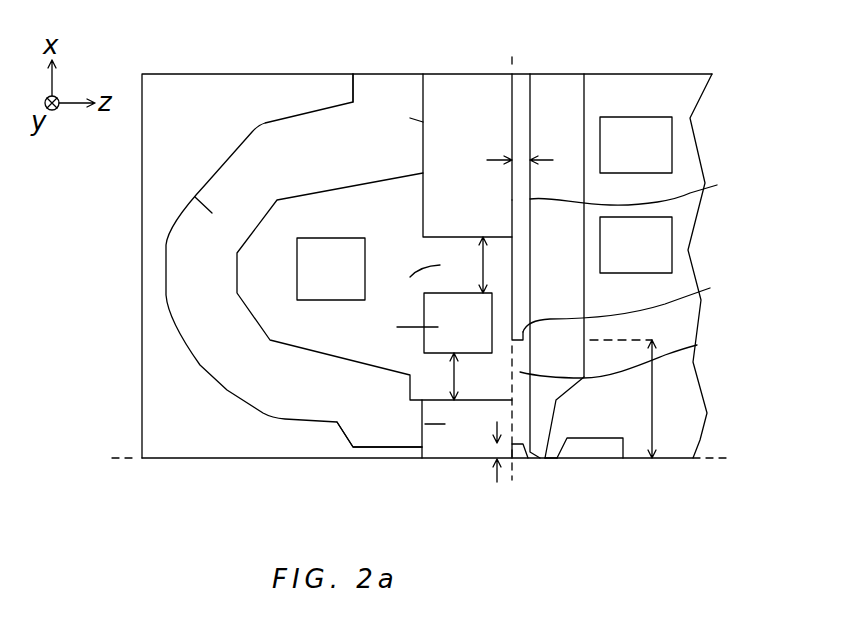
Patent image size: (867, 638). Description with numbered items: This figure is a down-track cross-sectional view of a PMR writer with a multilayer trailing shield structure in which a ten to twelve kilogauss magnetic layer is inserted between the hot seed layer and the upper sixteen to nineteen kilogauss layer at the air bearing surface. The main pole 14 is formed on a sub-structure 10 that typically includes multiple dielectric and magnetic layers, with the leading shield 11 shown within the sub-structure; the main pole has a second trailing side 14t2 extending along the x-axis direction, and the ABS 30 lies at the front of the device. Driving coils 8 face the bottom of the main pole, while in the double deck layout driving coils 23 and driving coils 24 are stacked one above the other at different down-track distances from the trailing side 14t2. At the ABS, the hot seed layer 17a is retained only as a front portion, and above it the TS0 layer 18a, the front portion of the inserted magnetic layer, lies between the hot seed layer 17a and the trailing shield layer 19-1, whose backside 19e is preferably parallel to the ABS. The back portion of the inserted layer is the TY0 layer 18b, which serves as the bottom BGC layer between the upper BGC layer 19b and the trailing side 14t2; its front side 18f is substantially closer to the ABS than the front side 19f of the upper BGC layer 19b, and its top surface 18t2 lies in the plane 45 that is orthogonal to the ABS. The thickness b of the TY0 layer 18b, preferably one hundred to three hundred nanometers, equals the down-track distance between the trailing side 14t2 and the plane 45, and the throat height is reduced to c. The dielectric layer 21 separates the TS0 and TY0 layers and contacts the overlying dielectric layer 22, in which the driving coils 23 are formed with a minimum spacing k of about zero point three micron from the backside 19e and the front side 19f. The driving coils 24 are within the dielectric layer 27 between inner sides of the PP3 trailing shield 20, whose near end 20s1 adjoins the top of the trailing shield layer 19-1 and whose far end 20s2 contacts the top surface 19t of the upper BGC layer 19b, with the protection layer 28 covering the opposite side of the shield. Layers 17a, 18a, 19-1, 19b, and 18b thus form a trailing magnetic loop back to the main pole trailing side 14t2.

The driving coils 8 is at (658, 140).
The sub-structure 10 is at (675, 450).
The leading shield 11 is at (617, 450).
The main pole 14 is at (571, 90).
The second trailing side 14t2 is at (654, 188).
The hot seed layer 17a is at (553, 466).
The top surface of TY0 layer 18t2 is at (512, 112).
The bottom BGC layer (TY0 layer) 18b is at (523, 85).
The front side of bottom BGC layer 18f is at (642, 303).
The TS0 layer 18a is at (526, 460).
The upper BGC layer 19b is at (447, 97).
The front side of upper BGC layer 19f is at (423, 240).
The top surface of upper BGC layer 19t is at (423, 205).
The backside of trailing shield layer 19e is at (440, 400).
The trailing shield layer 19-1 is at (453, 440).
The PP3 trailing shield 20 is at (195, 197).
The near end of PP3 trailing shield 20s1 is at (425, 424).
The far end of PP3 trailing shield 20s2 is at (410, 118).
The dielectric layer 21 is at (697, 345).
The dielectric layer 22 is at (397, 327).
The driving coils 23 is at (410, 277).
The driving coils 24 is at (308, 267).
The dielectric layer 27 is at (270, 295).
The protection layer 28 is at (207, 98).
The ABS 30 is at (420, 459).
The plane 45 is at (512, 278).
The thickness b is at (528, 160).
The throat height c is at (490, 447).
The minimum distance k is at (468, 318).